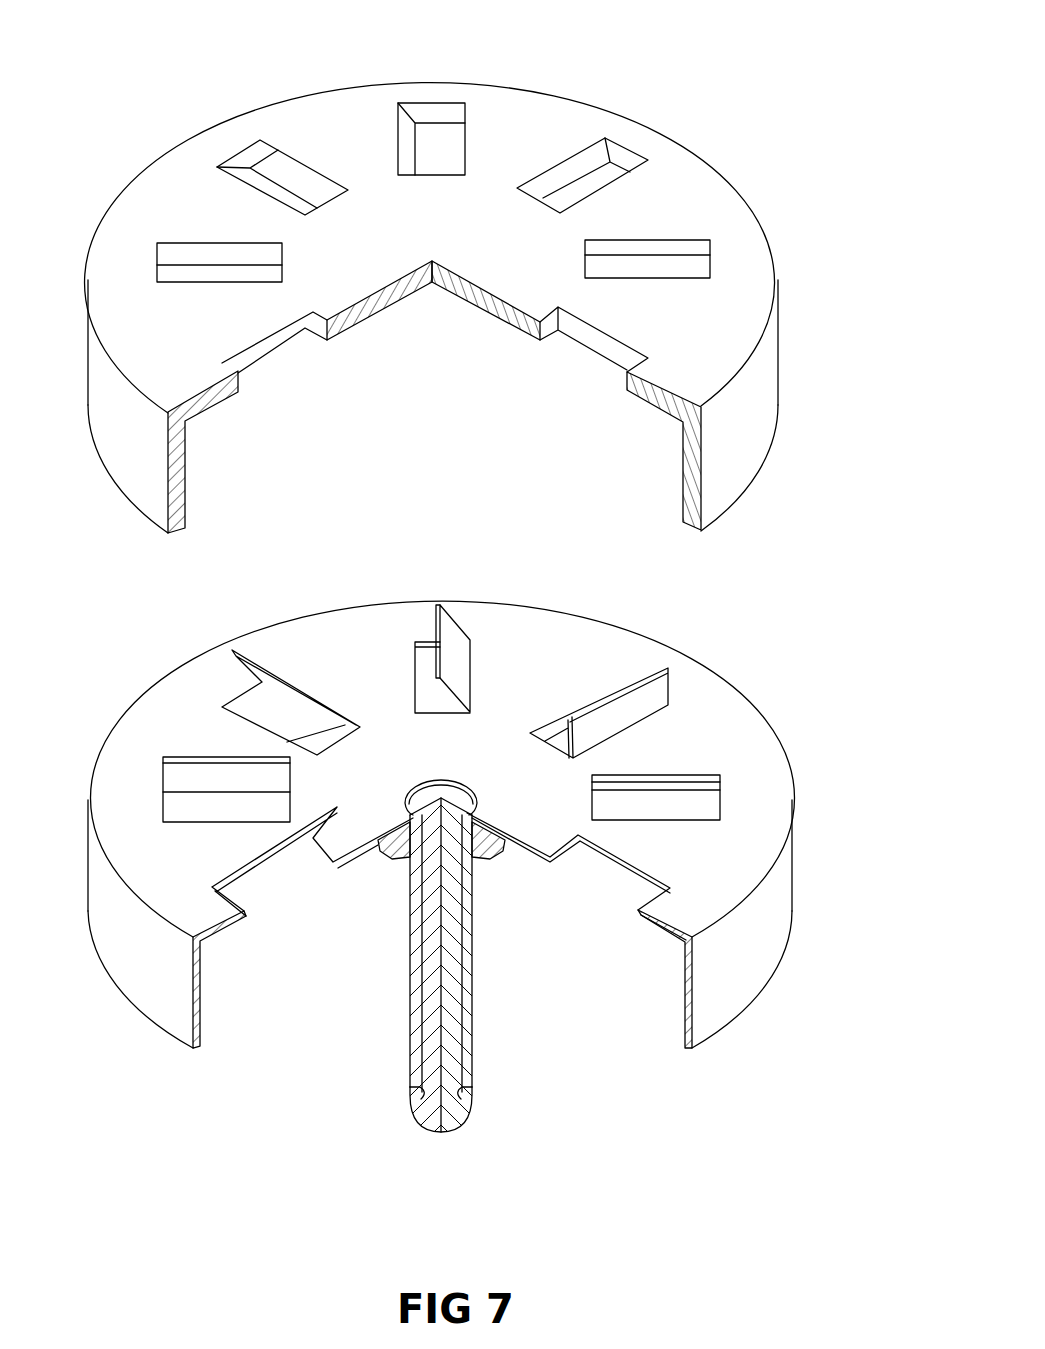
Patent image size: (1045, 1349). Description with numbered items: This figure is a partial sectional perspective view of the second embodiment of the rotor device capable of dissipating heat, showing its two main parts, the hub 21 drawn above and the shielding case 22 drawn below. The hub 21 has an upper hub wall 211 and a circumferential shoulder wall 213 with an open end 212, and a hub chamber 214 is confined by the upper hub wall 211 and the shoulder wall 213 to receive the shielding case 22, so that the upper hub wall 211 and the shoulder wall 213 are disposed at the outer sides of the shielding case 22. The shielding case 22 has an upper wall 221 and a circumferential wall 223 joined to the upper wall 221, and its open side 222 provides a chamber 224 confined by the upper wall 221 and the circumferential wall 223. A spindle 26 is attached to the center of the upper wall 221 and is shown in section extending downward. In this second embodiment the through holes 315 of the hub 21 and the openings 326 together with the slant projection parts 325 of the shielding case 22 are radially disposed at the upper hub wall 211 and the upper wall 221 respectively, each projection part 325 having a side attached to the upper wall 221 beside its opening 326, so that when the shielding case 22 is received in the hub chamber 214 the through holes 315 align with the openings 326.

The hub 21 is at (452, 285).
The upper hub wall 211 is at (348, 145).
The open end 212 is at (195, 518).
The shoulder wall 213 is at (693, 450).
The hub chamber 214 is at (480, 413).
The through holes 315 is at (613, 175).
The shielding case 22 is at (426, 857).
The upper wall 221 is at (747, 753).
The open side 222 is at (217, 1030).
The circumferential wall 223 is at (690, 1010).
The chamber 224 is at (492, 930).
The projection parts 325 is at (265, 680).
The openings 326 is at (435, 662).
The spindle 26 is at (453, 1030).